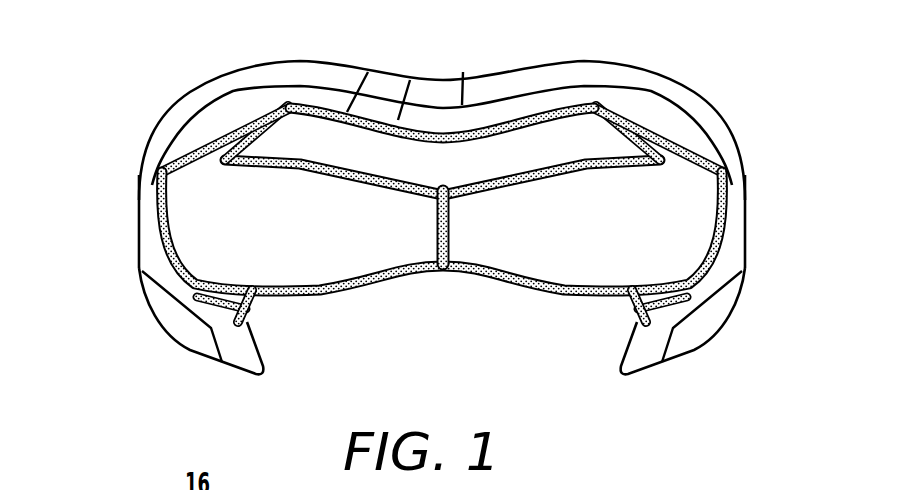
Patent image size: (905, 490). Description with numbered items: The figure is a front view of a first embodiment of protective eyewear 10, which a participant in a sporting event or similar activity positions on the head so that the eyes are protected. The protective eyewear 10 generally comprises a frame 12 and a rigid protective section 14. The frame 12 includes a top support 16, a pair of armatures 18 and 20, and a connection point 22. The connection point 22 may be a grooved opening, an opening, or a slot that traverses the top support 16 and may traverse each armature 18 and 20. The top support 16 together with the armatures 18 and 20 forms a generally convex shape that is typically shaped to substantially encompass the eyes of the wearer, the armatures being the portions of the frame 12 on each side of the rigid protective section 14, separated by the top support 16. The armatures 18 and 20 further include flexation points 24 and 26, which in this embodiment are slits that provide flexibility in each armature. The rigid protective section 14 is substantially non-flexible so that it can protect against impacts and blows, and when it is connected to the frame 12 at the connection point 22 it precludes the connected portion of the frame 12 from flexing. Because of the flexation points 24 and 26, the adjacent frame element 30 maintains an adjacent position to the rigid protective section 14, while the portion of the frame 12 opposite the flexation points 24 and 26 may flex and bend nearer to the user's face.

The protective eyewear 10 is at (123, 68).
The frame 12 is at (138, 267).
The rigid protective section 14 is at (323, 292).
The top support 16 is at (293, 60).
The armature 18 is at (145, 177).
The armature 20 is at (740, 183).
The connection point 22 is at (463, 72).
The flexation point 24 is at (747, 250).
The flexation point 26 is at (138, 222).
The adjacent frame element 30 is at (190, 135).